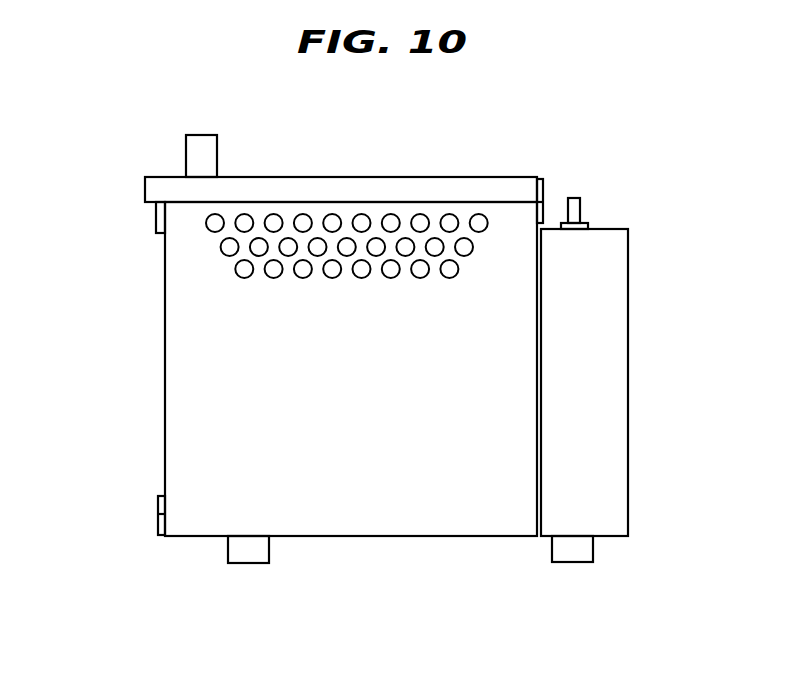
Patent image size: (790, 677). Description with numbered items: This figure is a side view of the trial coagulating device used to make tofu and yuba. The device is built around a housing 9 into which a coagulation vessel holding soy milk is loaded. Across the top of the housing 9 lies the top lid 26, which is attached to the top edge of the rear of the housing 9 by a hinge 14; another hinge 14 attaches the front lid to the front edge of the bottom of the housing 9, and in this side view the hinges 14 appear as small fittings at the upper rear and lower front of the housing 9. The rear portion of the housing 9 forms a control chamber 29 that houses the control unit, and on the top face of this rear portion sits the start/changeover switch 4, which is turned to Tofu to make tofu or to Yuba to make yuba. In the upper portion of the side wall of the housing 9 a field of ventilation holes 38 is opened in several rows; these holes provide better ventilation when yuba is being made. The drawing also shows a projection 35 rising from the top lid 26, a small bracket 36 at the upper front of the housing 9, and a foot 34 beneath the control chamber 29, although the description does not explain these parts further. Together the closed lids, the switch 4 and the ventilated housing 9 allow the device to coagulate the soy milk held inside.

The housing 9 is at (393, 380).
The top lid 26 is at (453, 190).
The projection 35 is at (203, 142).
The bracket 36 is at (156, 212).
The ventilation holes 38 is at (363, 218).
The hinge 14 is at (543, 181).
The control chamber 29 is at (618, 355).
The start/changeover switch 4 is at (580, 212).
The foot 34 is at (577, 562).